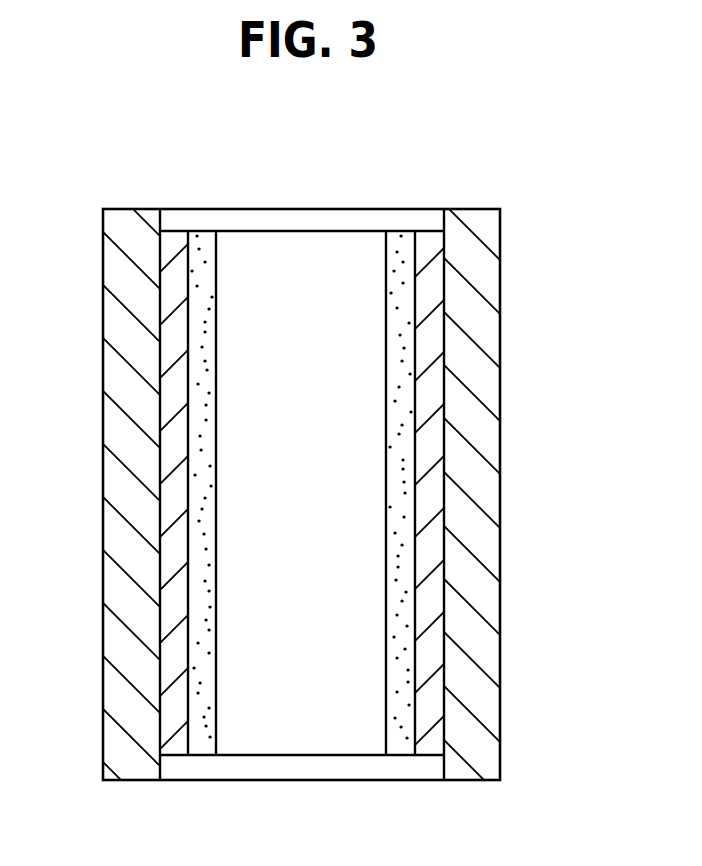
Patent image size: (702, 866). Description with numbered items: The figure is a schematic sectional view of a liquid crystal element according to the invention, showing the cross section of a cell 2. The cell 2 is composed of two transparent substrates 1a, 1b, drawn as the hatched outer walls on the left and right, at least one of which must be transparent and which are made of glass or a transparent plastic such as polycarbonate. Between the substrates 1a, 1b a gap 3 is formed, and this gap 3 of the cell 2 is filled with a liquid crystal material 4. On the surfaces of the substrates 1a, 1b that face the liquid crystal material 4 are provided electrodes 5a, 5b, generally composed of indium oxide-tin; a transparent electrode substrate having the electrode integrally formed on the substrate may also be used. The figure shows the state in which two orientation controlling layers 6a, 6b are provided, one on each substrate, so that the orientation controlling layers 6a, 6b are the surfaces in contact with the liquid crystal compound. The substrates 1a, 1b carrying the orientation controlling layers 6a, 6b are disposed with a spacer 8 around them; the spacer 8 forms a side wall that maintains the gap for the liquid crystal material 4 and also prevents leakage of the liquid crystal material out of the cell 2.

The gap 3 is at (518, 356).
The transparent substrate 1a is at (482, 265).
The transparent substrate 1b is at (122, 307).
The cell 2 is at (258, 240).
The liquid crystal material 4 is at (334, 241).
The spacer 8 is at (305, 770).
The electrode 5a is at (427, 247).
The electrode 5b is at (182, 276).
The orientation controlling layer 6a is at (398, 240).
The orientation controlling layer 6b is at (202, 240).